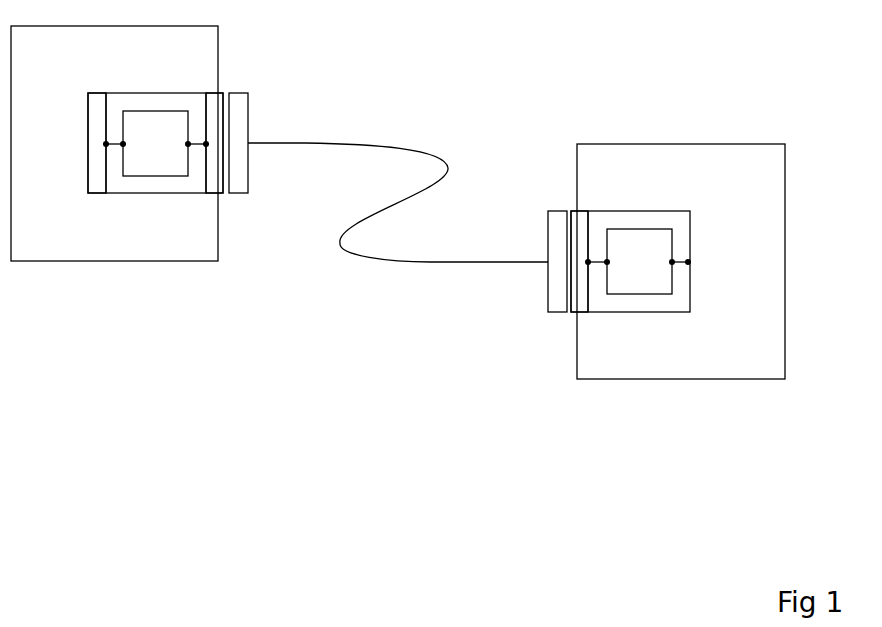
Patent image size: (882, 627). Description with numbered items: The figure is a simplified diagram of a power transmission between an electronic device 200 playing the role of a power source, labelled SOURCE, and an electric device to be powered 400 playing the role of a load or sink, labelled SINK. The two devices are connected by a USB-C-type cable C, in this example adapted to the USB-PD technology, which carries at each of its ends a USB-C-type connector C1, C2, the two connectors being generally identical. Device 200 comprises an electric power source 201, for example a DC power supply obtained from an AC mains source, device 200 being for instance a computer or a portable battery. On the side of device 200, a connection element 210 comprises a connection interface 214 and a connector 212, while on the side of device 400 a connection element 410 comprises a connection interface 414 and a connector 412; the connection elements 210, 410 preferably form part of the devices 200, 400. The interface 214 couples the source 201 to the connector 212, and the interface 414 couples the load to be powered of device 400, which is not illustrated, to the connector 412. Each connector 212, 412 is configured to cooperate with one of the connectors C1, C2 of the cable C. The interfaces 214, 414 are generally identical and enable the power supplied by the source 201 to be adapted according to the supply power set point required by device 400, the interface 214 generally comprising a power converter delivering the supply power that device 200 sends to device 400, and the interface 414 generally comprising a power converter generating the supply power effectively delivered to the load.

The electronic device 200 is at (50, 252).
The electric power source 201 is at (97, 193).
The connection element 210 is at (187, 194).
The connector 212 is at (218, 195).
The connection interface 214 is at (163, 167).
The electric device to be powered 400 is at (738, 367).
The connection element 410 is at (617, 313).
The connector 412 is at (575, 303).
The connection interface 414 is at (643, 297).
The USB-C-type cable C is at (412, 150).
The USB-C-type connector C1 is at (238, 100).
The USB-C-type connector C2 is at (560, 218).